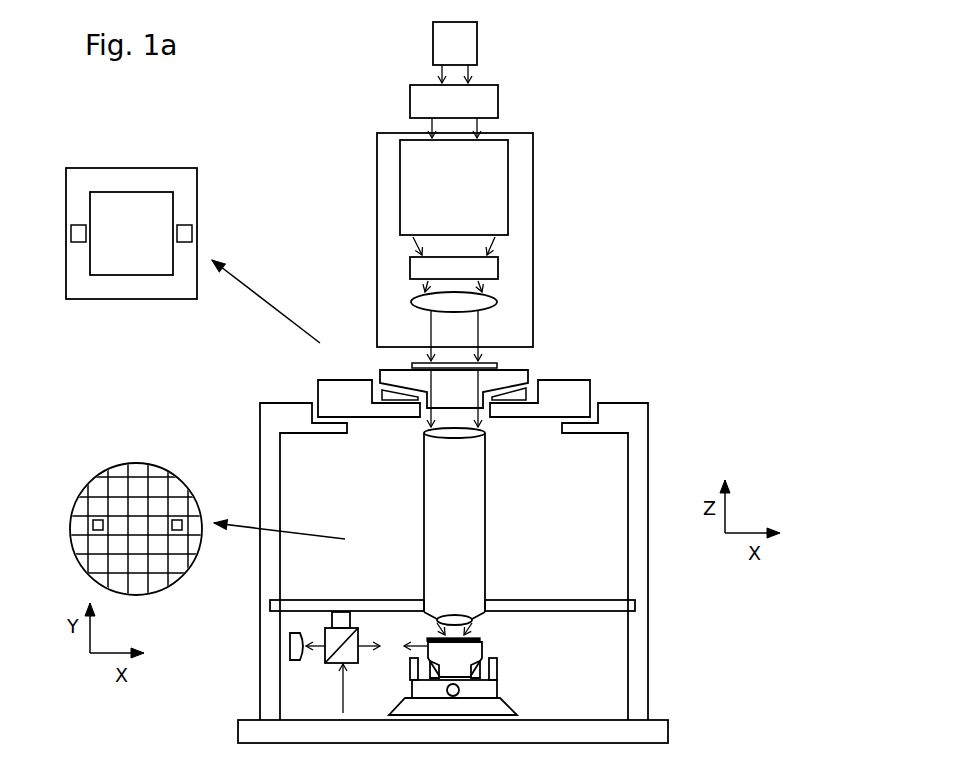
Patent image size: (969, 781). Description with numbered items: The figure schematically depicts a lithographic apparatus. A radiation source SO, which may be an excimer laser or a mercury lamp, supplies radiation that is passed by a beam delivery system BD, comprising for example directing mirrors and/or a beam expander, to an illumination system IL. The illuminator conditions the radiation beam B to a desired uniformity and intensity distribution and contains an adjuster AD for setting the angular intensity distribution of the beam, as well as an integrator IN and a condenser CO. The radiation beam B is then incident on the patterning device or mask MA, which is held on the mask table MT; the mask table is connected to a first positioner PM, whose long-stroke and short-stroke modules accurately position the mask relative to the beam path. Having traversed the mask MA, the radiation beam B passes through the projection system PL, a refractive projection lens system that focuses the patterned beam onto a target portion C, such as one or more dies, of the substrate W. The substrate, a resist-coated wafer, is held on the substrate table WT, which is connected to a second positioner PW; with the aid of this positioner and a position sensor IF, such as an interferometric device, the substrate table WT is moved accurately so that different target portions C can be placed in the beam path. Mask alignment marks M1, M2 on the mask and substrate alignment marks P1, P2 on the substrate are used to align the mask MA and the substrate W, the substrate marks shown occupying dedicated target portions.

The radiation source SO is at (477, 46).
The beam delivery system BD is at (498, 108).
The illumination system IL is at (533, 154).
The adjuster AD is at (508, 198).
The integrator IN is at (498, 266).
The condenser CO is at (497, 301).
The radiation beam B is at (457, 358).
The patterning device MA is at (410, 364).
The mask alignment mark M1 is at (187, 225).
The mask alignment mark M2 is at (75, 225).
The mask table MT is at (530, 372).
The first positioner PM is at (320, 380).
The projection system PL is at (485, 510).
The substrate W is at (430, 637).
The target portion C is at (138, 516).
The substrate alignment mark P1 is at (98, 520).
The substrate alignment mark P2 is at (177, 520).
The substrate table WT is at (480, 645).
The second positioner PW is at (500, 698).
The position sensor IF is at (316, 669).